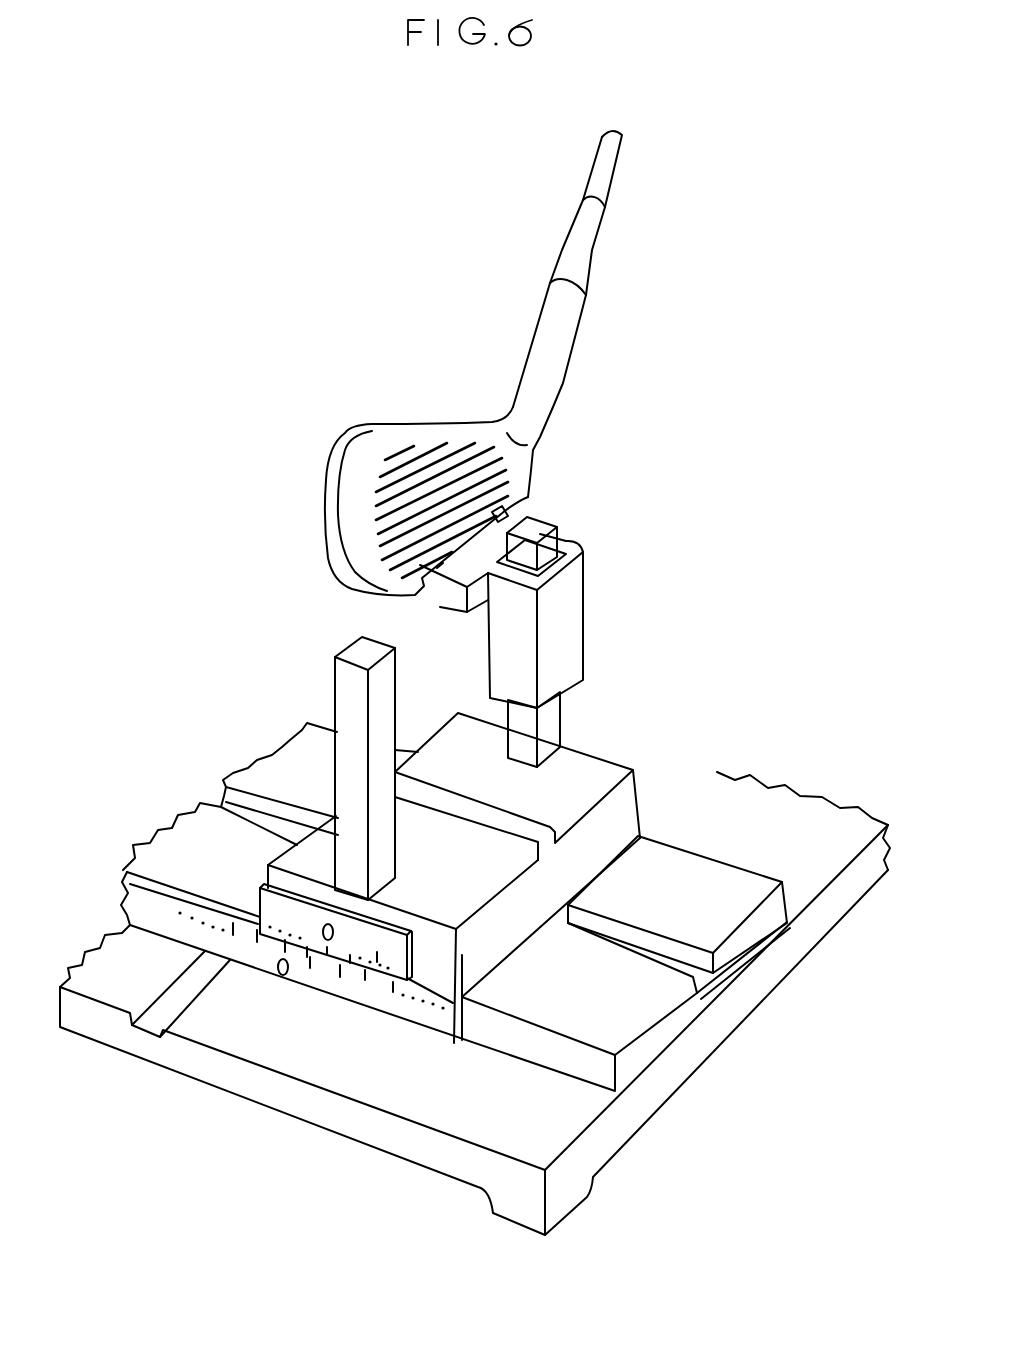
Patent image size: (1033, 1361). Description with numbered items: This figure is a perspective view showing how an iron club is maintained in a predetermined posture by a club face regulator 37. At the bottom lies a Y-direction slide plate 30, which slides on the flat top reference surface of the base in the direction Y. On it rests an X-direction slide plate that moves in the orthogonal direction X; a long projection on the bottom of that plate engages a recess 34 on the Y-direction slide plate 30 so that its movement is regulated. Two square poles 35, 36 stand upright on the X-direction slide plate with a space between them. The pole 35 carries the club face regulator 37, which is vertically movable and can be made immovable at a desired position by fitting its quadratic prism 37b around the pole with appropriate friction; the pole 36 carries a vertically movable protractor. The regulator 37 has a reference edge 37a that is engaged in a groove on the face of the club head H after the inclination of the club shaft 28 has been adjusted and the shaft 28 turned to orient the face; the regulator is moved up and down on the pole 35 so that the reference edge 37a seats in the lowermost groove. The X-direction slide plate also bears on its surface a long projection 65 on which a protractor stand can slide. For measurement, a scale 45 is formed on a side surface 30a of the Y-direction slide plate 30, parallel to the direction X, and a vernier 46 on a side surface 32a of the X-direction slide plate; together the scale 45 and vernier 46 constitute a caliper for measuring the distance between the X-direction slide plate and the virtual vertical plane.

The club shaft 28 is at (618, 164).
The club head H is at (368, 437).
The reference edge 37a is at (506, 513).
The quadratic prism 37b is at (573, 598).
The club face regulator 37 is at (458, 606).
The square pole 36 is at (340, 682).
The square pole 35 is at (553, 717).
The long projection 65 is at (517, 820).
The recess 34 is at (223, 803).
The Y-direction slide plate 30 is at (710, 870).
The side surface 32a is at (445, 958).
The scale 45 is at (317, 985).
The vernier 46 is at (373, 973).
The side surface 30a is at (543, 1060).